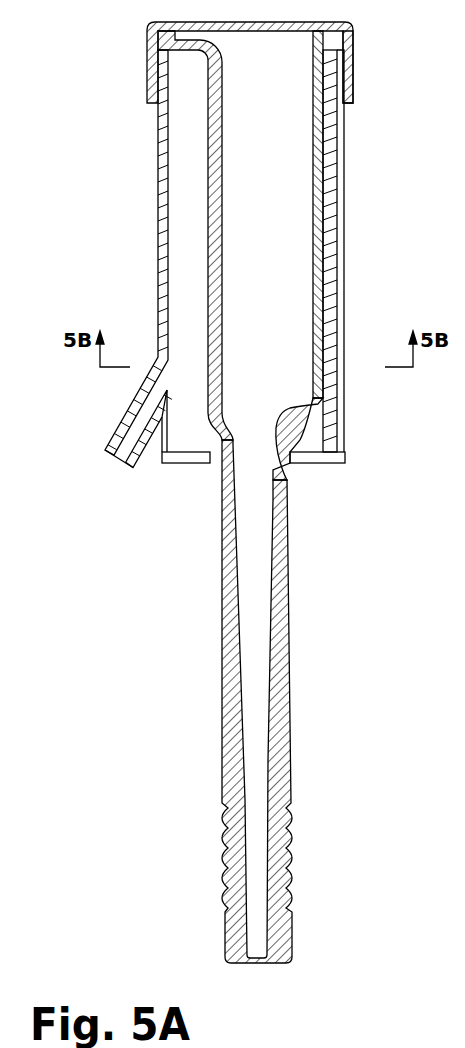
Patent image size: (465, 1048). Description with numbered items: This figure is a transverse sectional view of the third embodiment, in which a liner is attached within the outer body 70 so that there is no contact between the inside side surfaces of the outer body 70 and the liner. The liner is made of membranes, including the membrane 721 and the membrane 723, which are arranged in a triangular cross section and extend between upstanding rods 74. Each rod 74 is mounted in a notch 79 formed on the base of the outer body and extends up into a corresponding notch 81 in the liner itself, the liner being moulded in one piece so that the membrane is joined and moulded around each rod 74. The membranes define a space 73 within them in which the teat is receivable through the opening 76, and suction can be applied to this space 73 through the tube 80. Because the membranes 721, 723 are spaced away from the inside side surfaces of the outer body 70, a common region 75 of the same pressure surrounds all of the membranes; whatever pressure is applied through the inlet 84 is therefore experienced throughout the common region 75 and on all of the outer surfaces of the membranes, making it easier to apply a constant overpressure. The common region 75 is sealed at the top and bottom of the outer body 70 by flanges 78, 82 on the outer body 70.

The outer body 70 is at (337, 273).
The membrane 721 is at (330, 307).
The space 73 is at (302, 203).
The upstanding rod 74 is at (330, 430).
The common region 75 is at (175, 213).
The opening 76 is at (267, 30).
The flange 78 is at (353, 80).
The notch 79 is at (328, 462).
The tube 80 is at (288, 597).
The notch 81 is at (355, 43).
The flange 82 is at (213, 473).
The inlet 84 is at (120, 453).
The membrane 723 is at (217, 288).